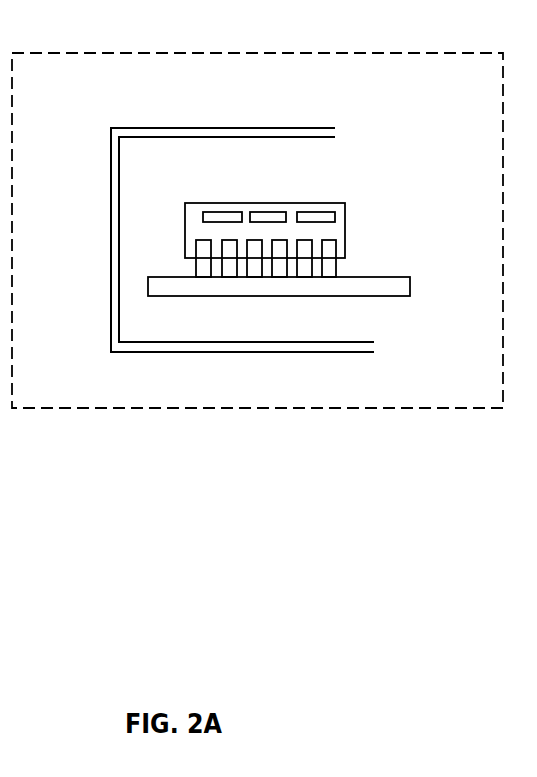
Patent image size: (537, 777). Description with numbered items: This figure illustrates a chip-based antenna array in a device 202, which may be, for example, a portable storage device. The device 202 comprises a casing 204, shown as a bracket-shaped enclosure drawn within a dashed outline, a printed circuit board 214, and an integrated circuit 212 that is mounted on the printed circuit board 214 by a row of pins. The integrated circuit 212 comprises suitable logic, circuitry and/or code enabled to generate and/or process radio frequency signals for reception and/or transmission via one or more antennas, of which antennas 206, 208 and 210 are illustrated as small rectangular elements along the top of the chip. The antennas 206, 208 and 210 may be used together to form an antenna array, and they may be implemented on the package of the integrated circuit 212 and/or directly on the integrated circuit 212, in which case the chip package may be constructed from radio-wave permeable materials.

The device 202 is at (110, 52).
The casing 204 is at (170, 127).
The antenna 206 is at (191, 212).
The antenna 208 is at (279, 210).
The antenna 210 is at (328, 222).
The integrated circuit 212 is at (315, 202).
The printed circuit board 214 is at (372, 297).